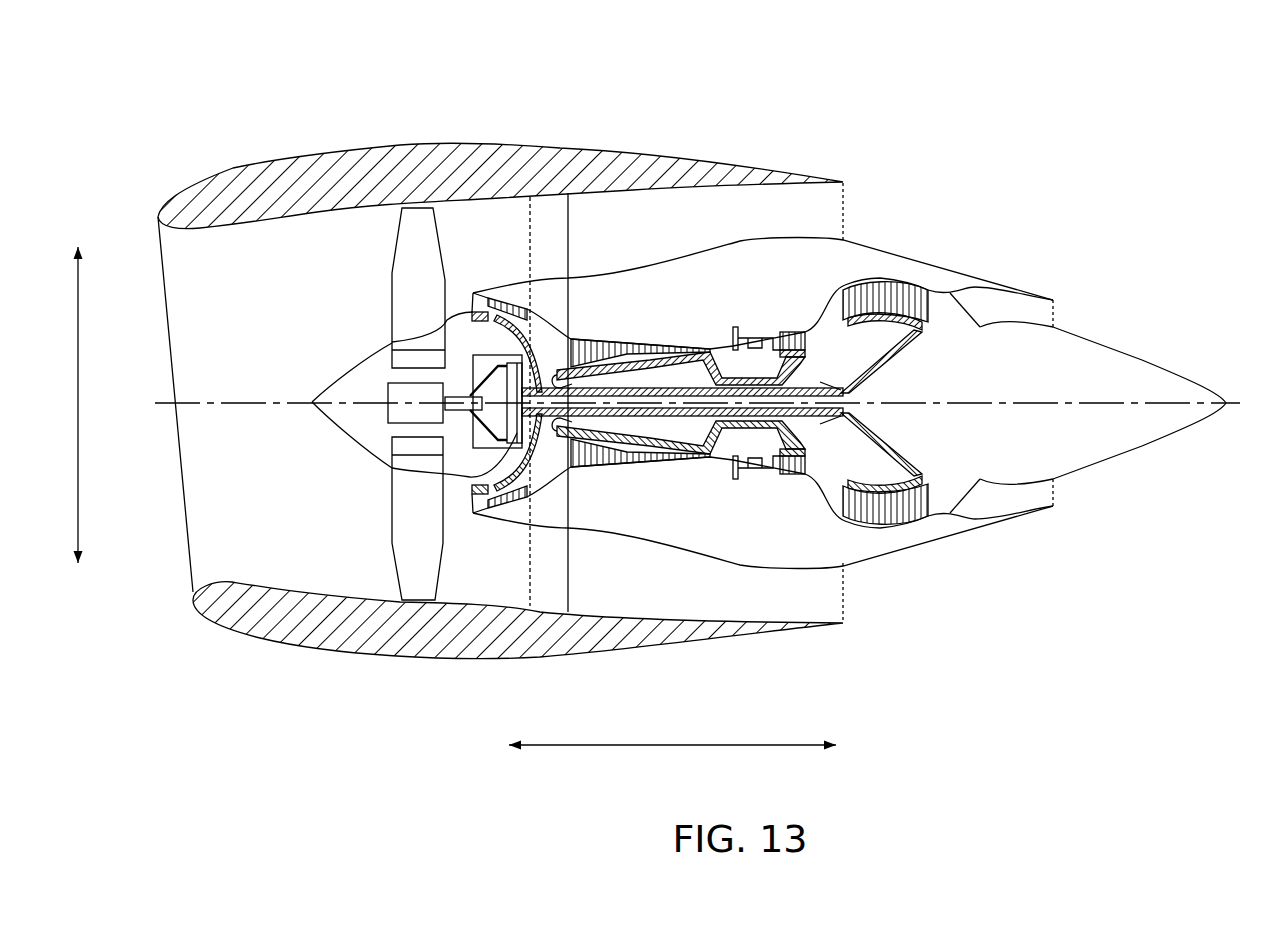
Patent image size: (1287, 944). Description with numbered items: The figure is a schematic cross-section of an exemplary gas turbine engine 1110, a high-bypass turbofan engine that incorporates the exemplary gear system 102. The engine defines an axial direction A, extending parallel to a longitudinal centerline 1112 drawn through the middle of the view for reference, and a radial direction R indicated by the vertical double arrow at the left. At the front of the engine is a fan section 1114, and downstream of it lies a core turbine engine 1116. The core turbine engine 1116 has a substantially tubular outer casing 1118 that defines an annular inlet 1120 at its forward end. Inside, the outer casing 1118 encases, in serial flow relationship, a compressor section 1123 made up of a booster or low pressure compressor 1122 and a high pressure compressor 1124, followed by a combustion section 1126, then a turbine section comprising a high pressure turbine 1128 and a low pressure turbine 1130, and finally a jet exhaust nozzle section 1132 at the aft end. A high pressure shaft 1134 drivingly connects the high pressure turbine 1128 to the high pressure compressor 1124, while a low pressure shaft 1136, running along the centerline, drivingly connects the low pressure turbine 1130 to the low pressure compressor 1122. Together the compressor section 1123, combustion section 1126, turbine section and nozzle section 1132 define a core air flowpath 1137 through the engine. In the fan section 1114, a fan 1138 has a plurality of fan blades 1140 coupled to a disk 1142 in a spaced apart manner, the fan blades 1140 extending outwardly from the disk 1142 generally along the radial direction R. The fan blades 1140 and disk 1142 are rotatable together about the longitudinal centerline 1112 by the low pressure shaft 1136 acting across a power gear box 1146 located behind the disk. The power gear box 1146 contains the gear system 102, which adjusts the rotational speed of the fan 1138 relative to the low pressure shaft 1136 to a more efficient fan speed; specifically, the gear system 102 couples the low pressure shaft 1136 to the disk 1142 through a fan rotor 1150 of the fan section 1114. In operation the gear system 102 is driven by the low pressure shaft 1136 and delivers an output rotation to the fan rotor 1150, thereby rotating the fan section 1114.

The gas turbine engine 1110 is at (1062, 131).
The longitudinal centerline 1112 is at (1003, 402).
The fan section 1114 is at (368, 262).
The core turbine engine 1116 is at (697, 303).
The outer casing 1118 is at (773, 567).
The annular inlet 1120 is at (488, 500).
The low pressure compressor 1122 is at (552, 462).
The compressor section 1123 is at (645, 456).
The high pressure compressor 1124 is at (598, 457).
The combustion section 1126 is at (753, 470).
The high pressure turbine 1128 is at (812, 470).
The low pressure turbine 1130 is at (902, 527).
The jet exhaust nozzle section 1132 is at (985, 497).
The high pressure shaft 1134 is at (750, 373).
The low pressure shaft 1136 is at (852, 378).
The core air flowpath 1137 is at (553, 497).
The fan 1138 is at (352, 455).
The fan blades 1140 is at (390, 558).
The disk 1142 is at (390, 343).
The power gear box 1146 is at (487, 353).
The fan rotor 1150 is at (462, 400).
The gear system 102 is at (400, 474).
The radial direction R is at (80, 290).
The axial direction A is at (678, 744).